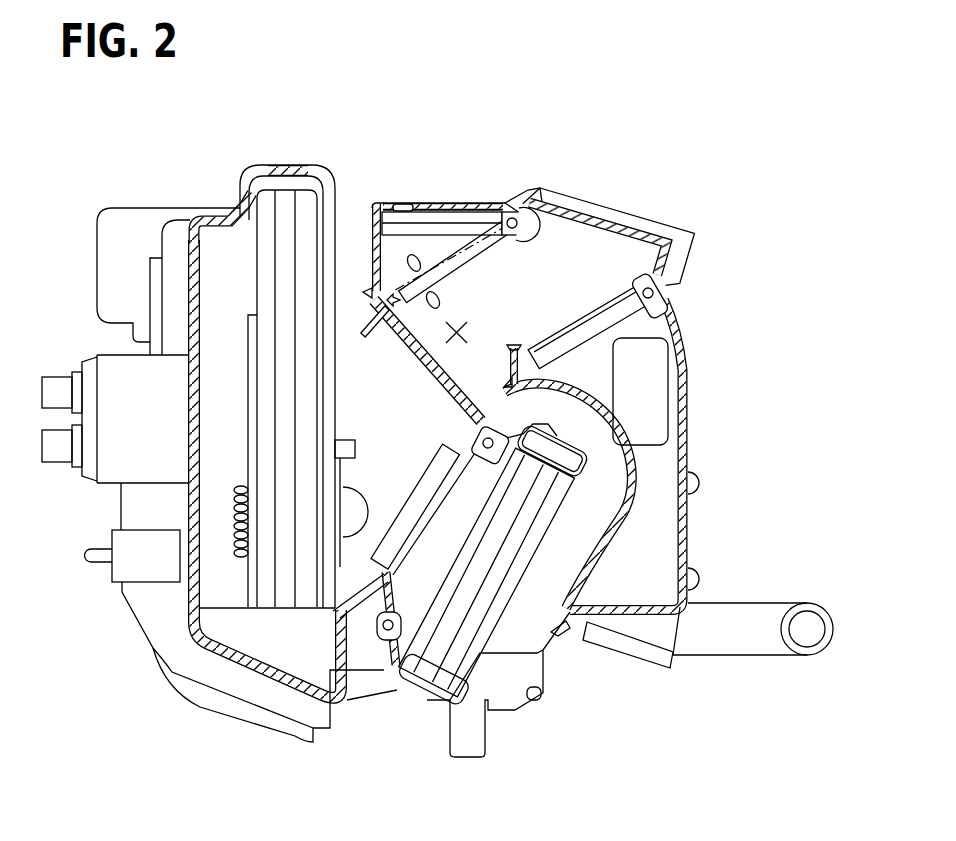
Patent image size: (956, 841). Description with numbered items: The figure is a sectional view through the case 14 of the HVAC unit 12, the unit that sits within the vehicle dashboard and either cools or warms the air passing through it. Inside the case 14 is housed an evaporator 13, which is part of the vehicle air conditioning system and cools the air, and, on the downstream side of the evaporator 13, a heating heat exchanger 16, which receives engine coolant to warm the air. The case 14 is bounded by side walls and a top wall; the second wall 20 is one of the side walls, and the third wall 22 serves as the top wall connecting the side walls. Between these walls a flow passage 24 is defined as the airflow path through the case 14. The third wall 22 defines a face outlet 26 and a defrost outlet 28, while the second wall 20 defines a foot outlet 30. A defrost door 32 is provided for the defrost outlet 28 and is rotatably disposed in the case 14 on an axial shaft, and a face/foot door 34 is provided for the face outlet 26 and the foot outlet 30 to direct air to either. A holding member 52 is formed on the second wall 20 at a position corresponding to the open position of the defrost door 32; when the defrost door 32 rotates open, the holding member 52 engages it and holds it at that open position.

The HVAC unit 12 is at (538, 121).
The evaporator 13 is at (290, 270).
The case 14 is at (690, 398).
The heating heat exchanger 16 is at (430, 658).
The second wall 20 is at (626, 260).
The third wall 22 is at (522, 203).
The flow passage 24 is at (467, 332).
The face outlet 26 is at (555, 198).
The defrost outlet 28 is at (403, 204).
The foot outlet 30 is at (668, 423).
The defrost door 32 is at (474, 215).
The face/foot door 34 is at (613, 322).
The holding member 52 is at (425, 245).